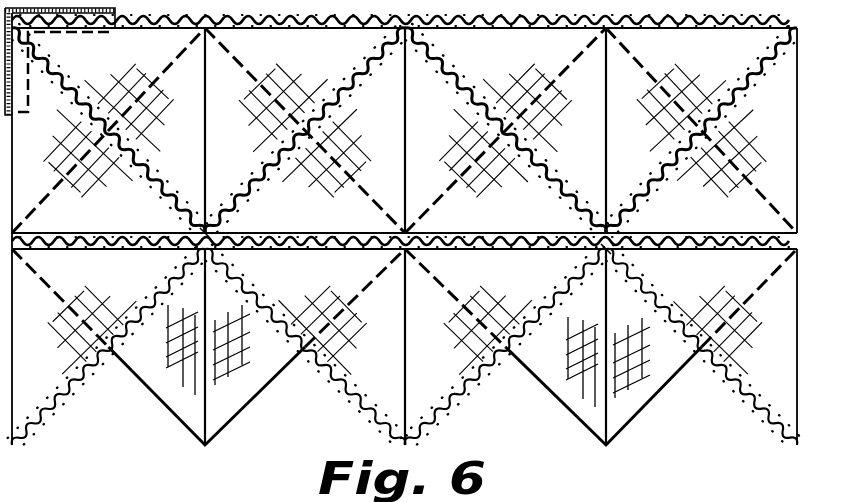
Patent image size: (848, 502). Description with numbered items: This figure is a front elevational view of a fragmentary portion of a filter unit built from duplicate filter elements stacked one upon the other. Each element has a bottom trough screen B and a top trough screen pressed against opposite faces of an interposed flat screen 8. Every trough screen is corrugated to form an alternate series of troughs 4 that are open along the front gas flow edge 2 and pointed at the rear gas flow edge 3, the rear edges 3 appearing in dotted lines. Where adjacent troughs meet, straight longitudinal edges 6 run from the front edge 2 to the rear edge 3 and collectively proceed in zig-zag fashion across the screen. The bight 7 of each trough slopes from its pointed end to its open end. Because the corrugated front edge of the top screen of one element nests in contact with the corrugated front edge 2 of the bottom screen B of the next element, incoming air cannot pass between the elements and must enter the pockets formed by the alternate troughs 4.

The front gas flow edge 2 is at (447, 412).
The rear gas flow edge 3 is at (178, 54).
The alternate troughs 4 is at (405, 226).
The longitudinal edges or crests 6 is at (611, 251).
The bight 7 is at (173, 207).
The flat screen 8 is at (314, 250).
The bottom trough screen B is at (170, 281).